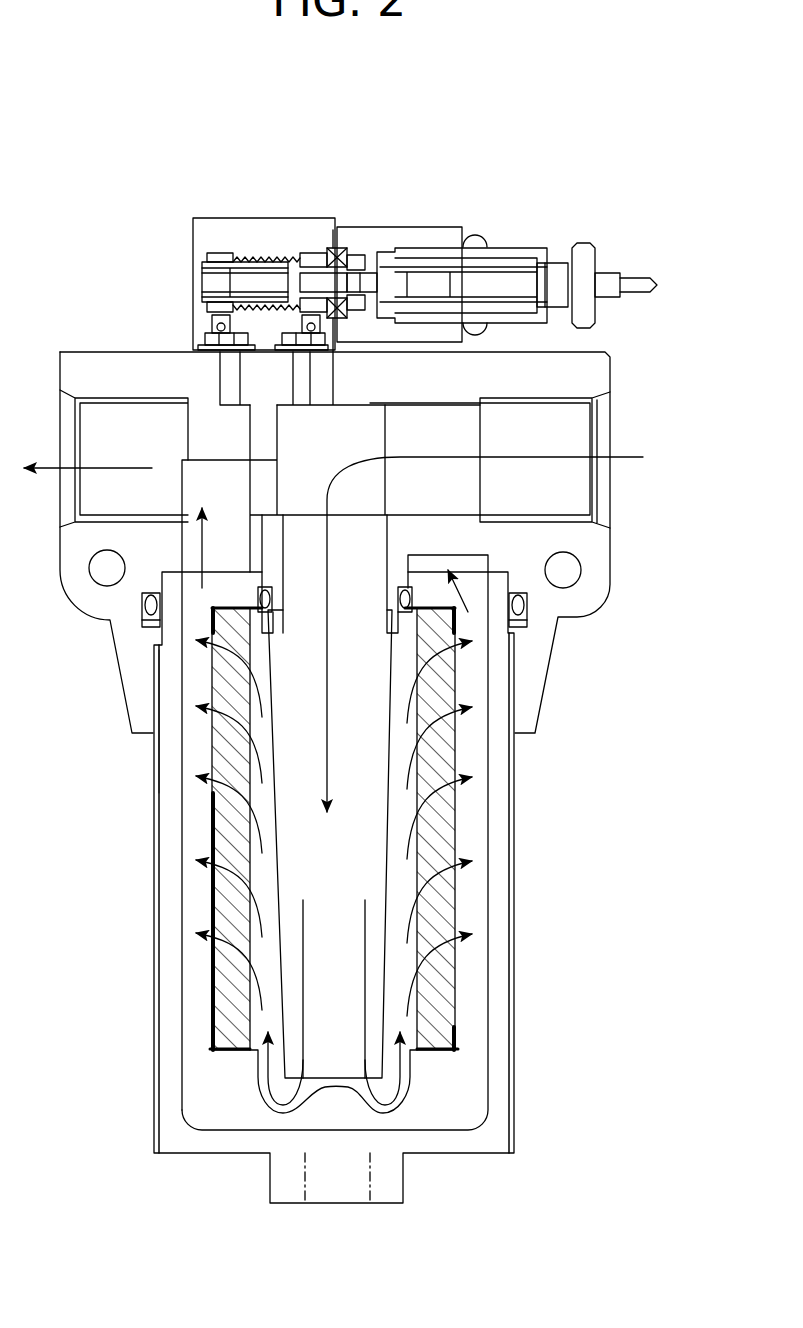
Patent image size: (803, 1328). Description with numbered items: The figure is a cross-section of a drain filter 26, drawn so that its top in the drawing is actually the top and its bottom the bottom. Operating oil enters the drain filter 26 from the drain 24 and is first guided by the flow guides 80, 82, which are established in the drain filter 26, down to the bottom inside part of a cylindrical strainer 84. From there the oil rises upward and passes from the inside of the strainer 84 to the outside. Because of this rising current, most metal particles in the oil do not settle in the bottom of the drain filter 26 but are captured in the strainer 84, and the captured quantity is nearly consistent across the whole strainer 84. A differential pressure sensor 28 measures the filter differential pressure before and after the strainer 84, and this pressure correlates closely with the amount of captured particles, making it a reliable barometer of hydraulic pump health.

The drain 24 is at (573, 492).
The drain filter 26 is at (153, 833).
The differential pressure sensor 28 is at (313, 218).
The flow guide 80 is at (352, 1063).
The flow guide 82 is at (413, 1082).
The cylindrical strainer 84 is at (455, 892).